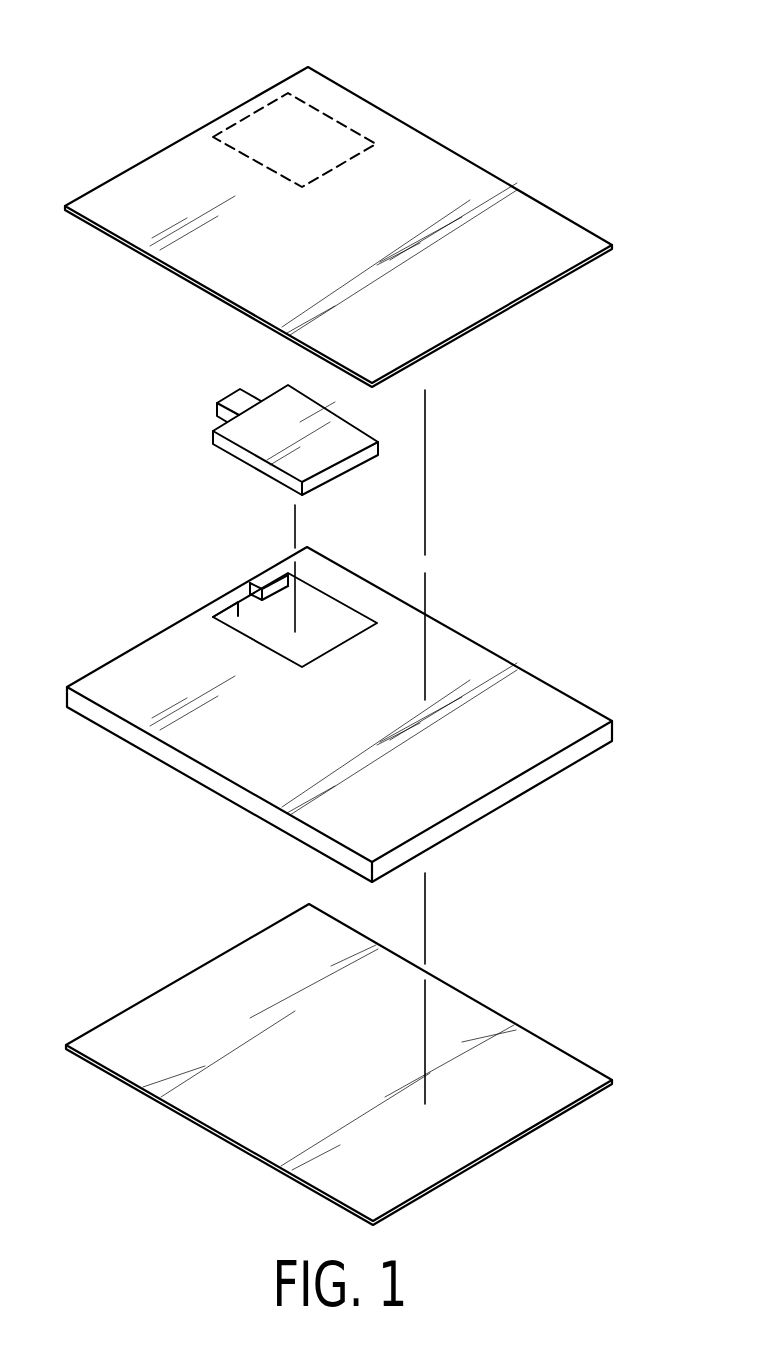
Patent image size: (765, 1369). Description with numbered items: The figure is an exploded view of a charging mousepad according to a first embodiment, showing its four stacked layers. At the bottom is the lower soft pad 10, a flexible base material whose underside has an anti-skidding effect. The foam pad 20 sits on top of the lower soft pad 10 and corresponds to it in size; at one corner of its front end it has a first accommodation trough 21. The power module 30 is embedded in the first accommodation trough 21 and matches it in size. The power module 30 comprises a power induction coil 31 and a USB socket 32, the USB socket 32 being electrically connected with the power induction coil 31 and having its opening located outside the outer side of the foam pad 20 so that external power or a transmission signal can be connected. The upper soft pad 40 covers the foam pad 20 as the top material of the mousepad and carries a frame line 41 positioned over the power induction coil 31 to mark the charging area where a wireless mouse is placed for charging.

The lower soft pad 10 is at (555, 1033).
The foam pad 20 is at (565, 683).
The first accommodation trough 21 is at (260, 618).
The power module 30 is at (216, 438).
The power induction coil 31 is at (262, 439).
The USB socket 32 is at (233, 398).
The upper soft pad 40 is at (565, 205).
The frame line 41 is at (342, 118).